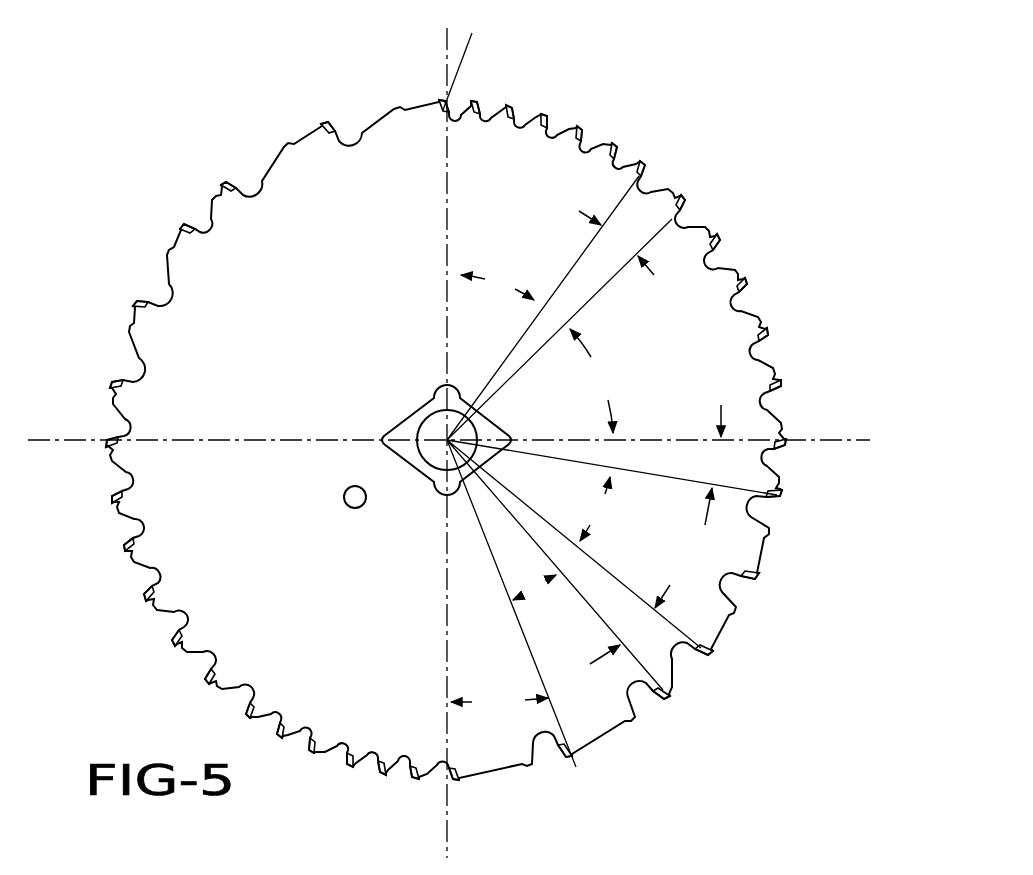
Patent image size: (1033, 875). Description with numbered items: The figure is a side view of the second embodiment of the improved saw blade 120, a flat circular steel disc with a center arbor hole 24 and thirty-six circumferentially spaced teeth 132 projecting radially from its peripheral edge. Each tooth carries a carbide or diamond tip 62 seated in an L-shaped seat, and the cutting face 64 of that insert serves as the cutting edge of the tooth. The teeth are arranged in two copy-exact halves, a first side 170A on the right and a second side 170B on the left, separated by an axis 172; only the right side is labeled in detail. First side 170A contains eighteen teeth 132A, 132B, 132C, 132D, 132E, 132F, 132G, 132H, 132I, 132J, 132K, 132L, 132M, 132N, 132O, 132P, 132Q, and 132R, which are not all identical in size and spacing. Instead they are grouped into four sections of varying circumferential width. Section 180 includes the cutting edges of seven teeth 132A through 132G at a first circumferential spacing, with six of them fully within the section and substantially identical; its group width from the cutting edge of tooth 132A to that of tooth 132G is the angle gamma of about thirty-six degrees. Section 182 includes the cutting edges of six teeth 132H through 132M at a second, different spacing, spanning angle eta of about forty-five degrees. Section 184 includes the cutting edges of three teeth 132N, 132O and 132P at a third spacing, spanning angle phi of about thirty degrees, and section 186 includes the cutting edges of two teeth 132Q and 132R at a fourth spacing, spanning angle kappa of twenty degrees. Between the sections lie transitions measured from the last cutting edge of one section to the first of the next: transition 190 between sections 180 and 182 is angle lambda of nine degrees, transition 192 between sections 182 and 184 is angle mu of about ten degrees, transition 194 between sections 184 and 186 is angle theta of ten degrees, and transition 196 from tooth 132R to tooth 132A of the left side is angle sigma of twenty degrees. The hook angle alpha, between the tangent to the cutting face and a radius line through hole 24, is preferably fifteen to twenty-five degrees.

The saw blade 120 is at (188, 156).
The tooth 132 is at (302, 139).
The tooth 132A is at (440, 100).
The tooth 132B is at (477, 103).
The tooth 132C is at (512, 115).
The tooth 132D is at (545, 127).
The tooth 132E is at (579, 142).
The tooth 132F is at (612, 158).
The tooth 132G is at (639, 178).
The tooth 132H is at (680, 207).
The tooth 132I is at (717, 246).
The tooth 132J is at (746, 289).
The tooth 132K is at (770, 337).
The tooth 132L is at (782, 387).
The tooth 132M is at (787, 440).
The tooth 132N is at (785, 493).
The tooth 132O is at (763, 578).
The tooth 132P is at (714, 655).
The tooth 132Q is at (671, 698).
The tooth 132R is at (572, 756).
The first side 170A is at (712, 328).
The second side 170B is at (214, 286).
The center arbor hole 24 is at (432, 424).
The carbide or diamond tip 62 is at (341, 773).
The cutting face 64 is at (340, 743).
The axis 172 is at (450, 834).
The section 180 is at (537, 243).
The section 182 is at (680, 373).
The section 184 is at (682, 531).
The section 186 is at (582, 638).
The transition 190 is at (590, 284).
The transition 192 is at (669, 454).
The transition 194 is at (590, 583).
The transition 196 is at (510, 668).